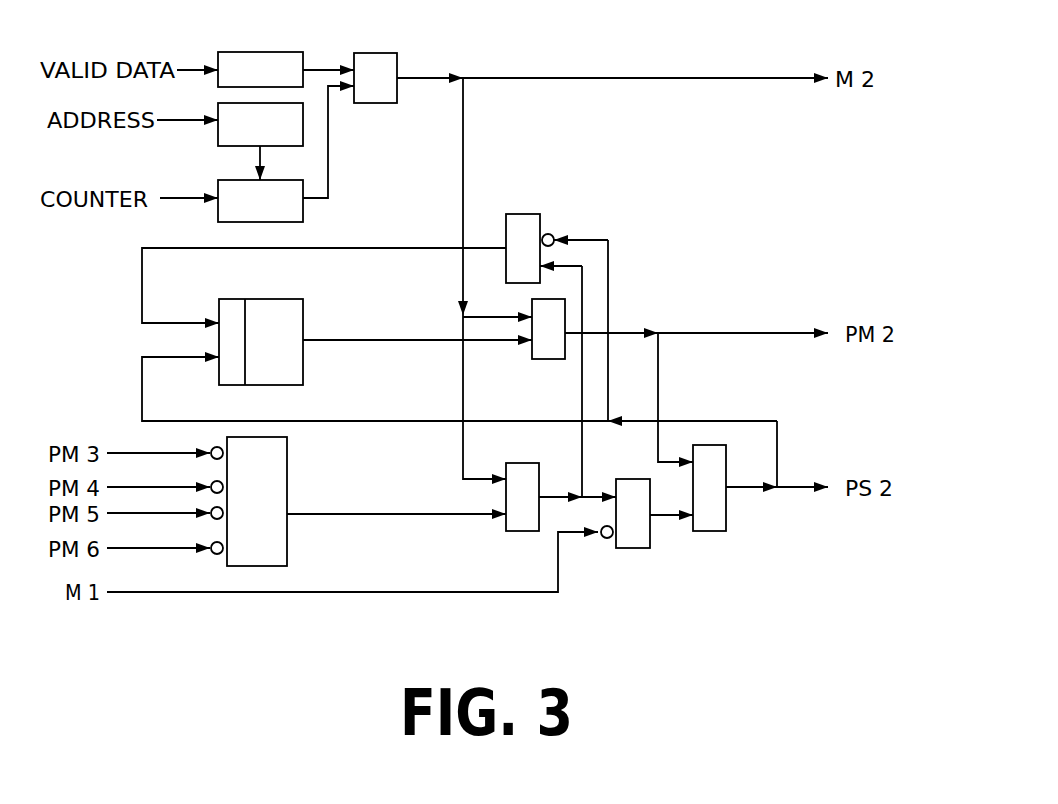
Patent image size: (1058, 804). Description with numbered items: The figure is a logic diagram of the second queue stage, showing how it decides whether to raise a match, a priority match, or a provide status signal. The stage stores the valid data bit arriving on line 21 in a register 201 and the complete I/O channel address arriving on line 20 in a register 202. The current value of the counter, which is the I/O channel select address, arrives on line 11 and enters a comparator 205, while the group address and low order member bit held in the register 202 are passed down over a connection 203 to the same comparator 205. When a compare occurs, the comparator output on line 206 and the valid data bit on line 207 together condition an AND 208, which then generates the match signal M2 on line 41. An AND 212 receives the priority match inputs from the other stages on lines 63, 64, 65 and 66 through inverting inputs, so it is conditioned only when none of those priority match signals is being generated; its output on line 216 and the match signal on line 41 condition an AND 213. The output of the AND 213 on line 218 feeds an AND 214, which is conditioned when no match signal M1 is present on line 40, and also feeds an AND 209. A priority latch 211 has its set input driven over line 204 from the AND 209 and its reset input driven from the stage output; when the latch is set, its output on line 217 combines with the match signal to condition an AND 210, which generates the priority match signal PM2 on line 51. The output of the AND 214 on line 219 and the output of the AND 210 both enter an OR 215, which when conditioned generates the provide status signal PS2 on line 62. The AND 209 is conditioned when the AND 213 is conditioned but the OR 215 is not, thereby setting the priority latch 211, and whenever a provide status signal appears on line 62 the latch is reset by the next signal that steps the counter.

The valid data bit line 21 is at (200, 68).
The I/O channel address line 20 is at (203, 122).
The counter value line 11 is at (197, 195).
The valid data register 201 is at (227, 63).
The address register 202 is at (237, 118).
The register output line 203 is at (260, 170).
The comparator 205 is at (268, 213).
The comparator output line 206 is at (328, 162).
The valid data register output line 207 is at (322, 67).
The AND gate 208 is at (378, 63).
The match signal M2 line 41 is at (767, 78).
The latch set line 204 is at (140, 280).
The AND gate 209 is at (513, 218).
The AND 213 output line 218 is at (582, 453).
The priority latch 211 is at (278, 315).
The priority latch output line 217 is at (405, 343).
The AND gate 210 is at (547, 360).
The priority match signal PM2 line 51 is at (685, 333).
The provide status signal PS3 line 63 is at (140, 452).
The provide status signal PS4 line 64 is at (168, 487).
The provide status signal PS5 line 65 is at (175, 513).
The provide status signal PS6 line 66 is at (170, 548).
The AND gate 212 is at (270, 472).
The AND 212 output line 216 is at (385, 516).
The AND gate 213 is at (522, 522).
The match signal M1 line 40 is at (190, 593).
The AND gate 214 is at (642, 540).
The AND 214 output line 219 is at (658, 515).
The OR gate 215 is at (710, 512).
The provide status signal PS2 line 62 is at (793, 487).